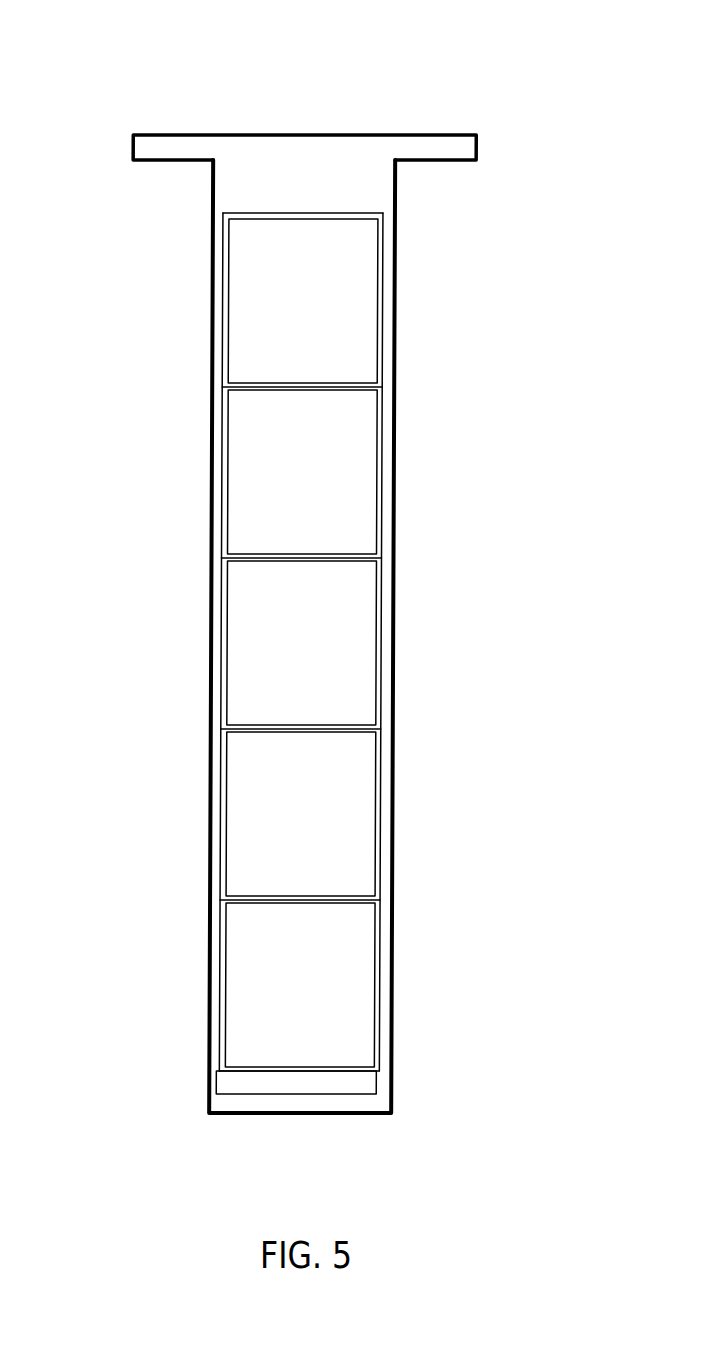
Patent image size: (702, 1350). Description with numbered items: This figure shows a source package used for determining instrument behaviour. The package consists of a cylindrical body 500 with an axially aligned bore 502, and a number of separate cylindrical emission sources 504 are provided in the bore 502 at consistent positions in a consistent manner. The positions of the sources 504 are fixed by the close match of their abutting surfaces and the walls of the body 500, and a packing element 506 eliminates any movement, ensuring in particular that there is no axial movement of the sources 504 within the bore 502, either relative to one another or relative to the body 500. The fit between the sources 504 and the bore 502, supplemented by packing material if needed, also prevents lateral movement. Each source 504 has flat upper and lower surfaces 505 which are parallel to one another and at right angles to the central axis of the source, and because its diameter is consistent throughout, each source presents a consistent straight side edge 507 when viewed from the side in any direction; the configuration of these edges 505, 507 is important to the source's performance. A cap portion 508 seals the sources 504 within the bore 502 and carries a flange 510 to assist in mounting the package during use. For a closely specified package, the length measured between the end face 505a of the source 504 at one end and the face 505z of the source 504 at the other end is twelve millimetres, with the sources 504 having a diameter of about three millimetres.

The cylindrical body 500 is at (395, 473).
The axially aligned bore 502 is at (303, 255).
The cylindrical emission source 504 is at (363, 338).
The flat upper and lower surface 505 is at (268, 389).
The end face 505a is at (363, 213).
The end face 505z is at (335, 1070).
The packing element 506 is at (298, 1082).
The straight side edge 507 is at (383, 620).
The cap portion 508 is at (330, 182).
The flange 510 is at (190, 135).